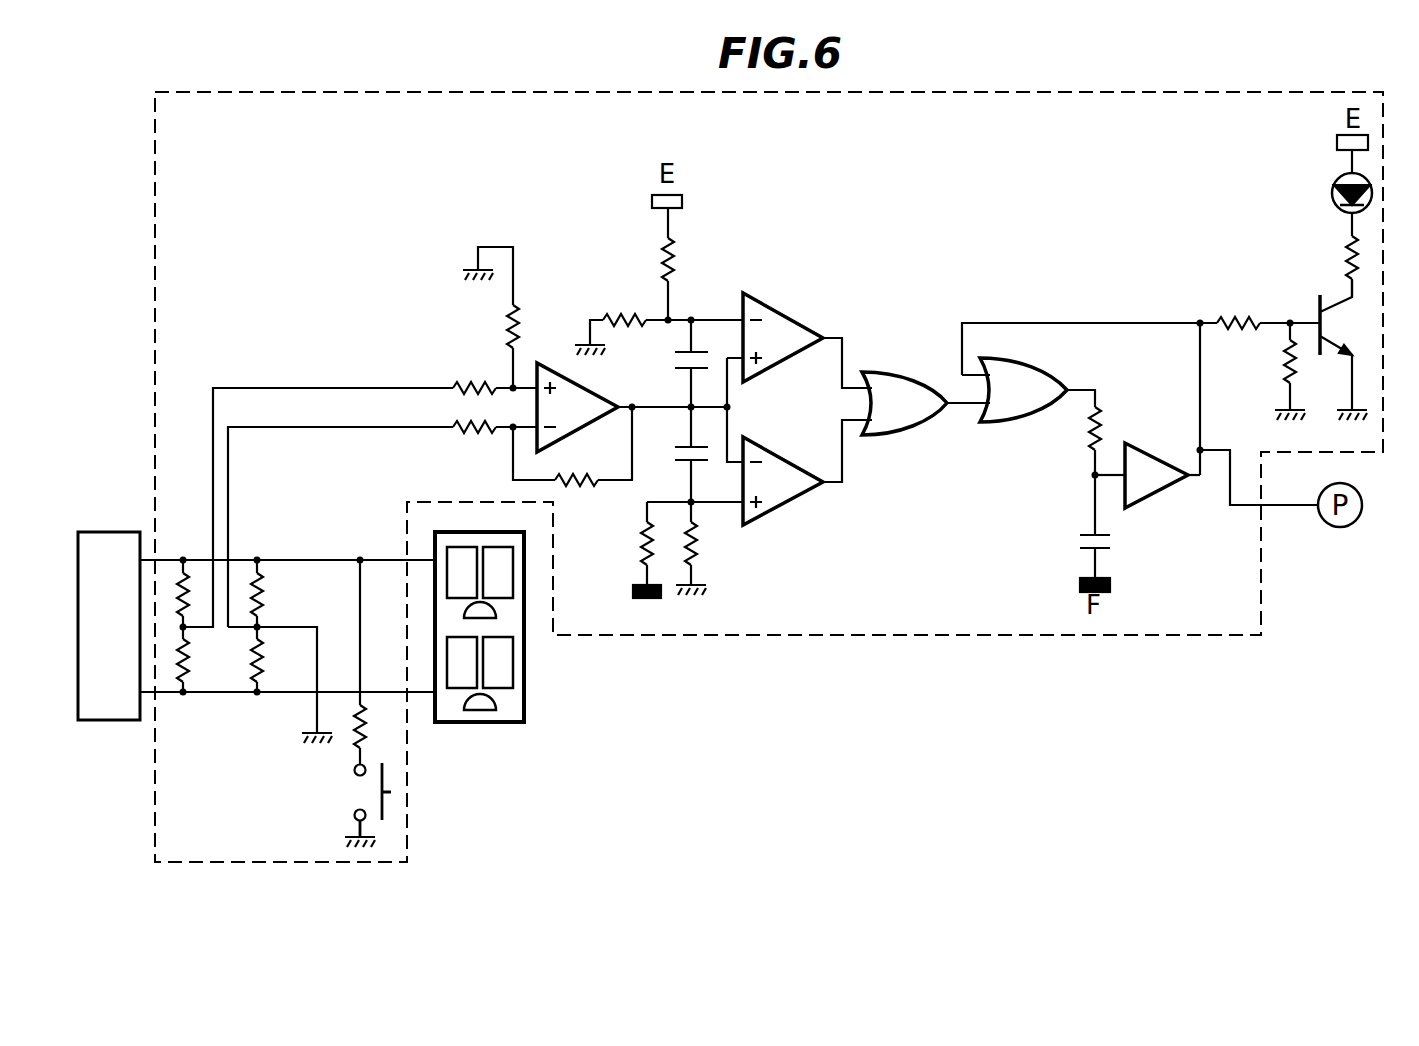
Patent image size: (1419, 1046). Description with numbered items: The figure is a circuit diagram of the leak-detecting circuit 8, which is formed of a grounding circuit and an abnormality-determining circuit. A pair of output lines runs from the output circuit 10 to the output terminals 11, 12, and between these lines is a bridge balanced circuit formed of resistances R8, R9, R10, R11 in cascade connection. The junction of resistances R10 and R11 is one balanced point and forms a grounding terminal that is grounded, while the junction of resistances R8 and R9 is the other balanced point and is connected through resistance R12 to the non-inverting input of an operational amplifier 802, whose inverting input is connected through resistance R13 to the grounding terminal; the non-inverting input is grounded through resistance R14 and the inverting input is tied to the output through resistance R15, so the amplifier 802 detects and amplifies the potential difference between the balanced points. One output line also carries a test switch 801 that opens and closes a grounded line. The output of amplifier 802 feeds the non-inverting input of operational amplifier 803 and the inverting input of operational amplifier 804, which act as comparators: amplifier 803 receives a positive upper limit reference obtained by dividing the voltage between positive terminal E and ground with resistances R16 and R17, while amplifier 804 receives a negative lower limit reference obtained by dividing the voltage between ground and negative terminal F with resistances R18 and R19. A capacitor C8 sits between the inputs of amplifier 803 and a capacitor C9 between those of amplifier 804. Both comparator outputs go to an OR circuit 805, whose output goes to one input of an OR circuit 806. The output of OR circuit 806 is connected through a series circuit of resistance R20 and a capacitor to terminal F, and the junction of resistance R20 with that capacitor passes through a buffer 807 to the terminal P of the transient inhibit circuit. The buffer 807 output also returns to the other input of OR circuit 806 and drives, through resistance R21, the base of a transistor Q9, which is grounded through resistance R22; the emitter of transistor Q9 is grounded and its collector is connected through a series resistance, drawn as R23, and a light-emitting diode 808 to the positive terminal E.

The leak-detecting circuit 8 is at (155, 147).
The output circuit 10 is at (96, 532).
The output terminal 11 is at (539, 627).
The output terminal 12 is at (524, 665).
The test switch 801 is at (360, 793).
The operational amplifier 802 is at (548, 363).
The operational amplifier 803 is at (809, 323).
The operational amplifier 804 is at (806, 488).
The OR circuit 805 is at (903, 437).
The OR circuit 806 is at (1008, 422).
The buffer 807 is at (1160, 492).
The light-emitting diode 808 is at (1330, 197).
The resistance R8 is at (207, 587).
The resistance R9 is at (202, 661).
The resistance R10 is at (282, 594).
The resistance R11 is at (282, 661).
The resistance R12 is at (493, 372).
The resistance R13 is at (493, 445).
The resistance R14 is at (489, 317).
The resistance R15 is at (572, 465).
The resistance R16 is at (693, 264).
The resistance R17 is at (659, 316).
The resistance R18 is at (710, 558).
The resistance R19 is at (626, 554).
The resistance R20 is at (1119, 466).
The resistance R21 is at (1260, 304).
The resistance R22 is at (1268, 371).
The resistor R23 is at (1328, 255).
The capacitor C8 is at (676, 363).
The capacitor C9 is at (676, 464).
The transistor Q9 is at (1345, 350).